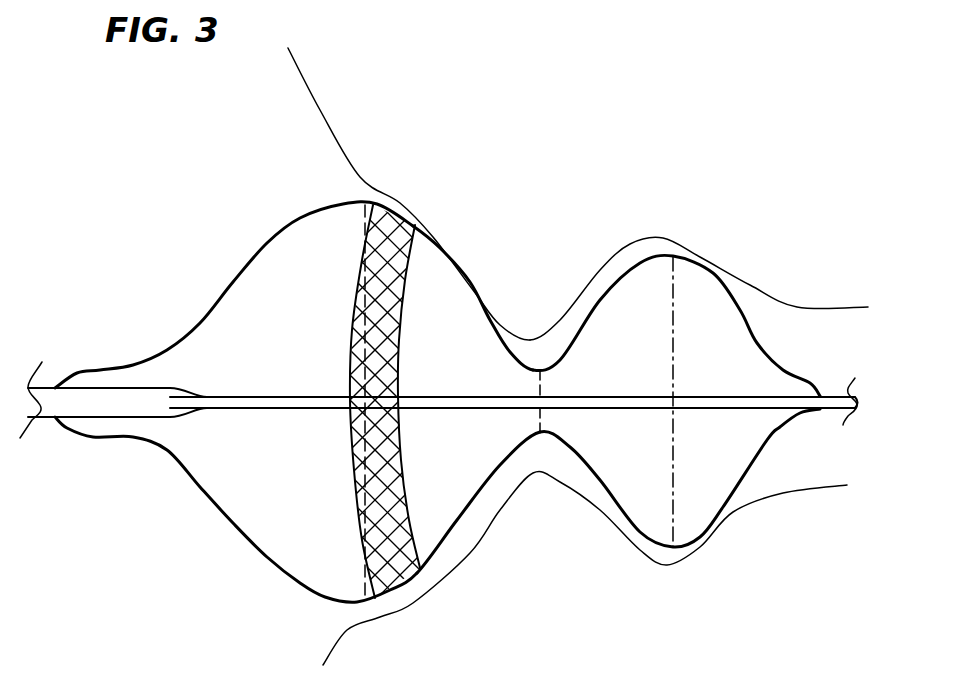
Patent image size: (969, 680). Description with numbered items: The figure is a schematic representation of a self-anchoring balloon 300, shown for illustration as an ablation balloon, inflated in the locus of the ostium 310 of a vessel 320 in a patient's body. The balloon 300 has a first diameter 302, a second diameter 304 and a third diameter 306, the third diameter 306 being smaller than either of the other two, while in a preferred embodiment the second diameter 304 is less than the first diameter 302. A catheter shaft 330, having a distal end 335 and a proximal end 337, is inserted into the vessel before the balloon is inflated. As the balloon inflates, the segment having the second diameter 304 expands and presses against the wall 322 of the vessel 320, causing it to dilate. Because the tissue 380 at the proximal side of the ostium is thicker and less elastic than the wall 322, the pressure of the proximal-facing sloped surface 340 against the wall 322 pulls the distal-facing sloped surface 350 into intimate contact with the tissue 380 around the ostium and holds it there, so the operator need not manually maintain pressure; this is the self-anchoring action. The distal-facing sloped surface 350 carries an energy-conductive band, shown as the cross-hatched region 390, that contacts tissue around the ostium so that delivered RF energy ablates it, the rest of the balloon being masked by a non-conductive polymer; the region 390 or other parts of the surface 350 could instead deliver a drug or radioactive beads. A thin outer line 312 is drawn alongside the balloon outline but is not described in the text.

The balloon 300 is at (676, 157).
The first diameter 302 is at (362, 594).
The second diameter 304 is at (682, 318).
The third diameter 306 is at (544, 412).
The ostium 310 is at (502, 265).
The proximal outer layer 312 is at (289, 68).
The vessel 320 is at (798, 307).
The wall 322 is at (590, 500).
The catheter shaft 330 is at (156, 410).
The distal end 335 is at (74, 378).
The proximal end 337 is at (840, 383).
The proximal-facing sloped surface 340 is at (627, 290).
The distal-facing sloped surface 350 is at (462, 286).
The tissue 380 is at (451, 231).
The region 390 is at (355, 254).